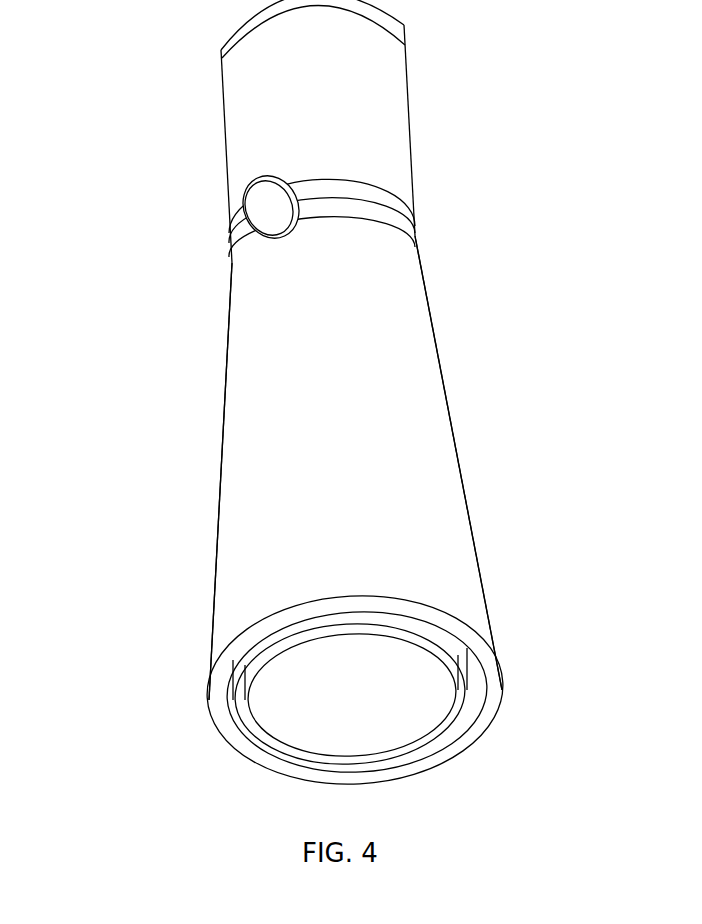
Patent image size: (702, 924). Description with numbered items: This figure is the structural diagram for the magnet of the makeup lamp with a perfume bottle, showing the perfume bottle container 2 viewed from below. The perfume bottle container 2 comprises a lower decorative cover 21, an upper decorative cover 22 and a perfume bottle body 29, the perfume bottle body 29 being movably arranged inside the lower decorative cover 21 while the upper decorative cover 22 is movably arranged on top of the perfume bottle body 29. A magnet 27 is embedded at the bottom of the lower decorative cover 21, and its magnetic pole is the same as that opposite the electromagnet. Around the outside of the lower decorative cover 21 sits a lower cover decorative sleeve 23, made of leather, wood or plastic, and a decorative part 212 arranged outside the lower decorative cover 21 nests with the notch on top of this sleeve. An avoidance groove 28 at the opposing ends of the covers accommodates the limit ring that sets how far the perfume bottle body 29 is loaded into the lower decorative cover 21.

The perfume bottle container 2 is at (230, 359).
The lower decorative cover 21 is at (417, 233).
The upper decorative cover 22 is at (357, 185).
The decorative part 212 is at (279, 207).
The lower cover decorative sleeve 23 is at (288, 428).
The magnet 27 is at (262, 659).
The avoidance groove 28 is at (358, 698).
The perfume bottle body 29 is at (468, 676).